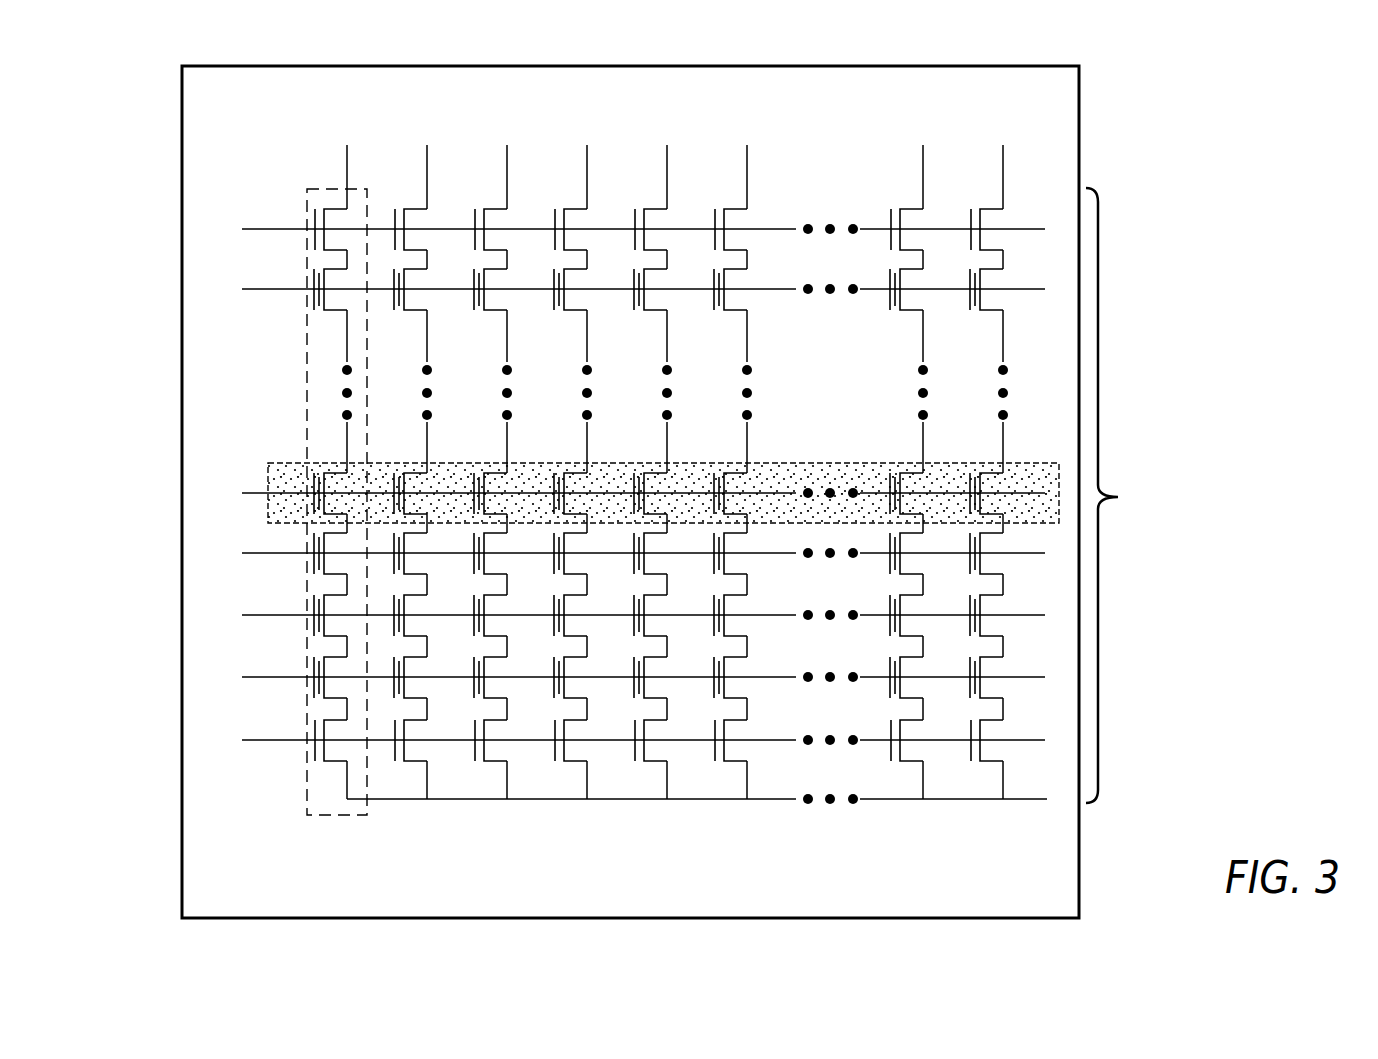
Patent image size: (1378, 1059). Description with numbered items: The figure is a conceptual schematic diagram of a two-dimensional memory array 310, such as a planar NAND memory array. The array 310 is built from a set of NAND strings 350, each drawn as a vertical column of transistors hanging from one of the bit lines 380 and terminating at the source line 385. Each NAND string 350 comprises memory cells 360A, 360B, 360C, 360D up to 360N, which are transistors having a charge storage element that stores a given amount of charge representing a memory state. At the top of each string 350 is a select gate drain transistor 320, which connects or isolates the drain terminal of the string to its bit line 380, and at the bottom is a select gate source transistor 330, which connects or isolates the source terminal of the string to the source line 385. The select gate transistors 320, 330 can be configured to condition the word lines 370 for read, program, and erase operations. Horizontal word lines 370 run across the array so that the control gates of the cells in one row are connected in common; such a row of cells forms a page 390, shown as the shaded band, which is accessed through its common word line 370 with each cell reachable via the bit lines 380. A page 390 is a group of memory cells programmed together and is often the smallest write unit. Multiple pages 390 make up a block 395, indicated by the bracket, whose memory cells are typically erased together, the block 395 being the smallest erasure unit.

The two-dimensional memory array 310 is at (657, 66).
The select gate drain transistor 320 is at (348, 219).
The select gate source transistor 330 is at (345, 748).
The NAND string 350 is at (348, 816).
The memory cell 360A is at (315, 668).
The memory cell 360B is at (315, 603).
The memory cell 360C is at (315, 540).
The memory cell 360D is at (315, 480).
The memory cell 360N is at (320, 300).
The word line 370 is at (215, 692).
The bit line 380 is at (327, 130).
The source line 385 is at (1019, 800).
The page 390 is at (1028, 462).
The block 395 is at (1124, 495).